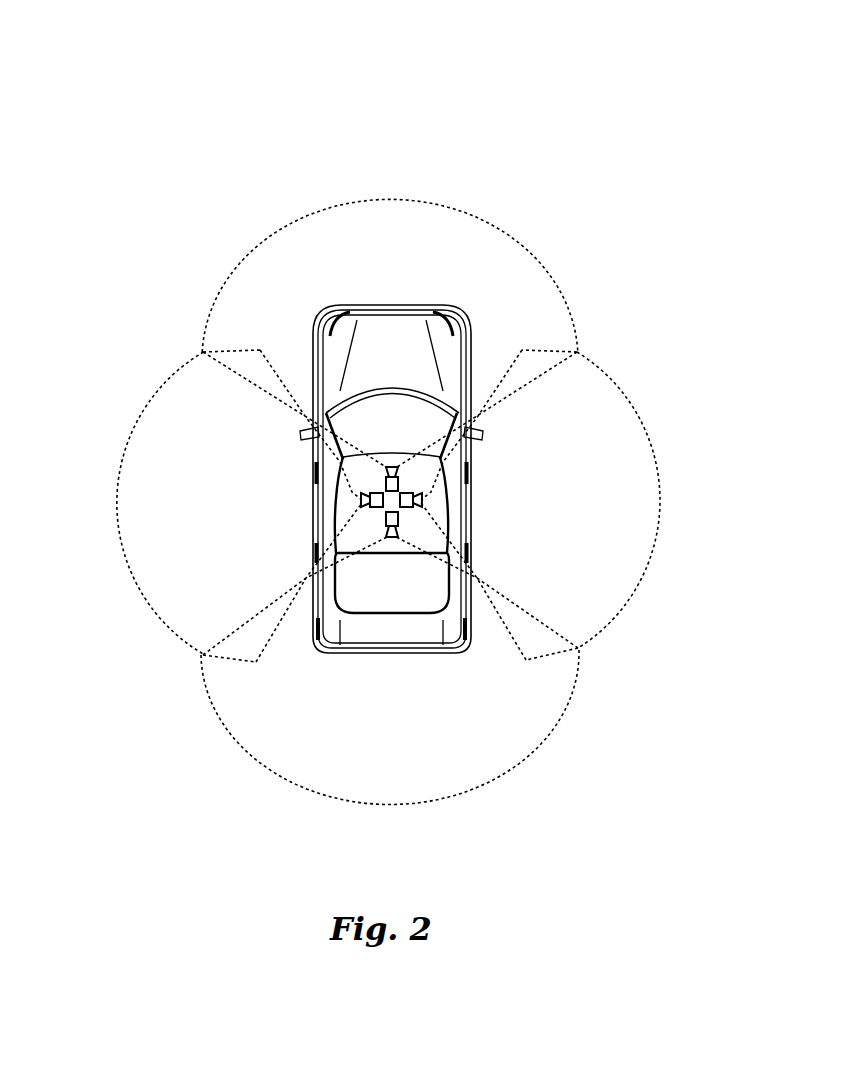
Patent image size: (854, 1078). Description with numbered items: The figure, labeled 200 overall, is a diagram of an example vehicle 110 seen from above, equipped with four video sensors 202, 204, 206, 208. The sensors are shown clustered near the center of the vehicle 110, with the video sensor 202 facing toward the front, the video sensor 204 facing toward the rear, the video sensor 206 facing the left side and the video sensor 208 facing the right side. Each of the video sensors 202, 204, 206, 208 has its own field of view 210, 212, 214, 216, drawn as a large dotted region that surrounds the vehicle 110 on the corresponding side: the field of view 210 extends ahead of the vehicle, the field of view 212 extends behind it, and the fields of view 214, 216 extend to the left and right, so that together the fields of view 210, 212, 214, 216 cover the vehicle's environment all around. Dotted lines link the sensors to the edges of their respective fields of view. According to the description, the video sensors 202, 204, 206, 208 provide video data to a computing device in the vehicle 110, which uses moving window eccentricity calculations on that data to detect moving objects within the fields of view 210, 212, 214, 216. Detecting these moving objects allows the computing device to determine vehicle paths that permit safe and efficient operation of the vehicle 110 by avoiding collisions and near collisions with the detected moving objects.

The sensor arrangement / detection system 200 is at (406, 45).
The vehicle 110 is at (432, 305).
The video sensor 202 is at (393, 464).
The video sensor 204 is at (393, 540).
The video sensor 206 is at (357, 504).
The video sensor 208 is at (424, 503).
The field of view 210 is at (272, 236).
The field of view 212 is at (235, 739).
The field of view 214 is at (166, 633).
The field of view 216 is at (606, 635).